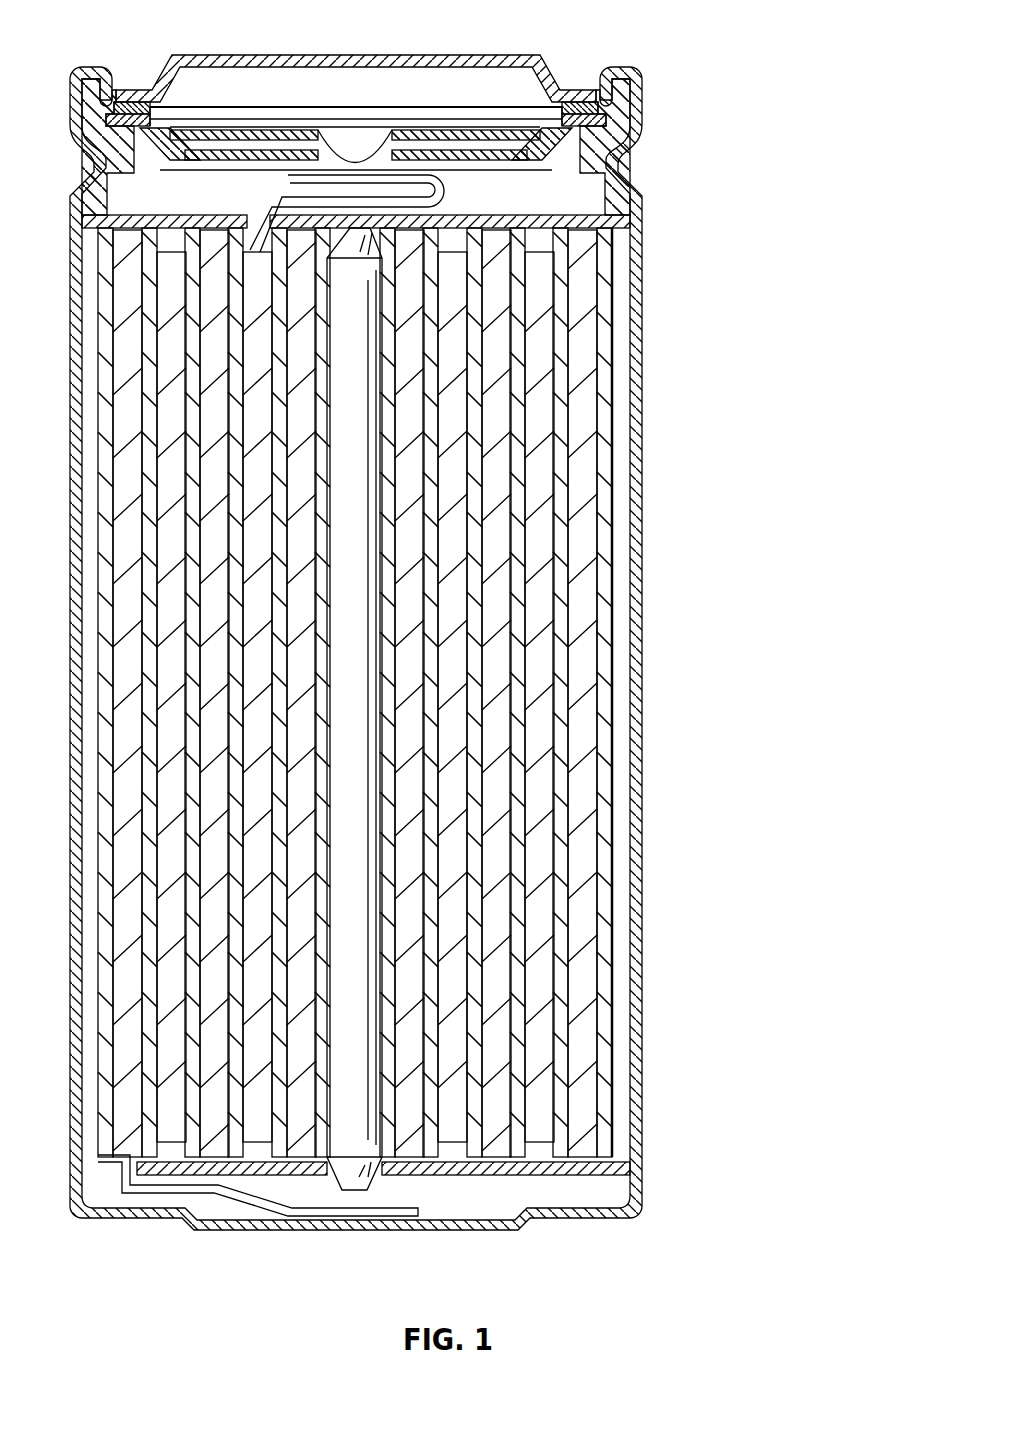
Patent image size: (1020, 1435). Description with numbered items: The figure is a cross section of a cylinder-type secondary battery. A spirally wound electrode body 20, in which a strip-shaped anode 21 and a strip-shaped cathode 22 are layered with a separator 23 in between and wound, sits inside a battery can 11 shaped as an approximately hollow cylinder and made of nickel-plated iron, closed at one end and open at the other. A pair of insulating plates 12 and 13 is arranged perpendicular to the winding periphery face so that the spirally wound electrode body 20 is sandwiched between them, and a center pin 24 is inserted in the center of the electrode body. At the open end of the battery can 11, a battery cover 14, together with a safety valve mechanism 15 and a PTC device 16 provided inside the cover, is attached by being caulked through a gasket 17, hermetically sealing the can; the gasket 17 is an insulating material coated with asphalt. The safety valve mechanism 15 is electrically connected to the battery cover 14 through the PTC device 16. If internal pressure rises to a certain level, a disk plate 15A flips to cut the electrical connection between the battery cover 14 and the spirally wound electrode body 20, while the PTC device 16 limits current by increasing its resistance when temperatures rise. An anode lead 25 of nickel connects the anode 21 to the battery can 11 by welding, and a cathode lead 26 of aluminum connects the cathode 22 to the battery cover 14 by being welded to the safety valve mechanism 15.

The battery can 11 is at (642, 290).
The insulating plate 12 is at (625, 222).
The insulating plate 13 is at (628, 1170).
The battery cover 14 is at (330, 55).
The safety valve mechanism 15 is at (496, 118).
The disk plate 15A is at (452, 133).
The PTC device 16 is at (612, 112).
The gasket 17 is at (612, 180).
The spirally wound electrode body 20 is at (402, 692).
The anode 21 is at (583, 517).
The cathode 22 is at (543, 582).
The separator 23 is at (562, 658).
The center pin 24 is at (345, 710).
The anode lead 25 is at (237, 1200).
The cathode lead 26 is at (330, 170).